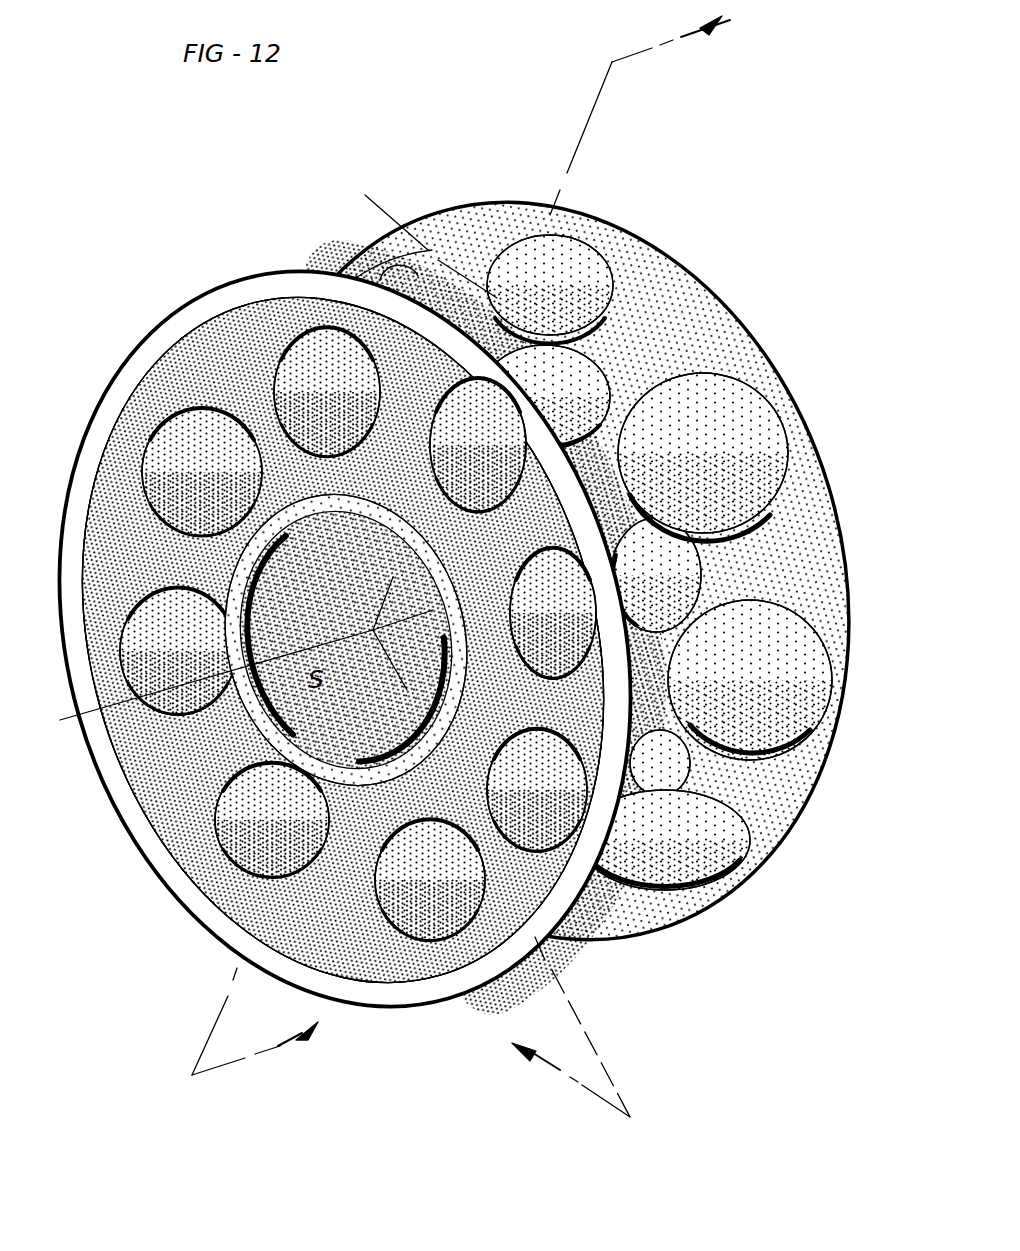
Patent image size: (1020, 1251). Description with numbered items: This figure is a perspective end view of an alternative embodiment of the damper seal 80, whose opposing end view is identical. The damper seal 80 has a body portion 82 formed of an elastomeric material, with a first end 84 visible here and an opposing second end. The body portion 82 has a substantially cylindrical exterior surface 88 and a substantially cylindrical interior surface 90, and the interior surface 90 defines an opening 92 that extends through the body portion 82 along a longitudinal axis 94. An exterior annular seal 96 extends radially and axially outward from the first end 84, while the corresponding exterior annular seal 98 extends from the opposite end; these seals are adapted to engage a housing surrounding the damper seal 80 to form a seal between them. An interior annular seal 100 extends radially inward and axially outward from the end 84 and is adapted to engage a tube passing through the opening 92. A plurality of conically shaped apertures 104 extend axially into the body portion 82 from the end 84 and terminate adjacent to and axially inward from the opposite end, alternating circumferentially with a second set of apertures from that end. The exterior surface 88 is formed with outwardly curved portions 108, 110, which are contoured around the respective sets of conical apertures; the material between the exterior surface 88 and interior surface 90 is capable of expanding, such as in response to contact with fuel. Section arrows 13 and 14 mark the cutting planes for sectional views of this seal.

The section line 13- 13 is at (480, 648).
The section line 14- 14 is at (473, 543).
The damper seal 80 is at (629, 207).
The body portion 82 is at (640, 352).
The first end 84 is at (105, 470).
The exterior surface 88 is at (377, 252).
The interior surface 90 is at (185, 775).
The opening 92 is at (183, 860).
The longitudinal axis 94 is at (92, 726).
The exterior annular seal 96 is at (403, 990).
The exterior annular seal 98 is at (793, 412).
The interior annular seal 100 is at (118, 540).
The conically shaped apertures 104 is at (455, 430).
The outwardly curved portions 108 is at (590, 376).
The outwardly curved portions 110 is at (575, 245).